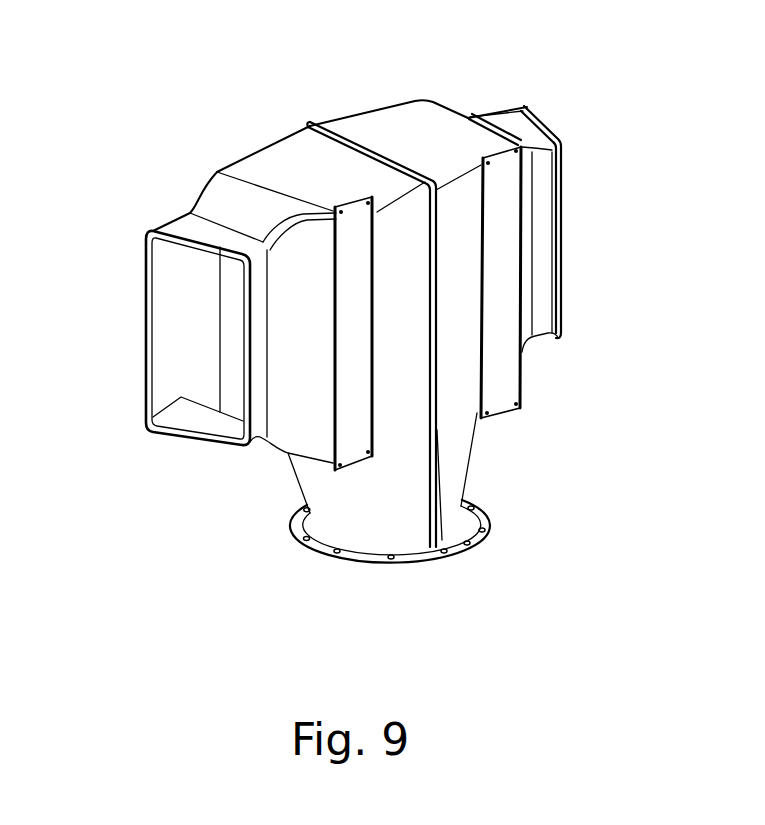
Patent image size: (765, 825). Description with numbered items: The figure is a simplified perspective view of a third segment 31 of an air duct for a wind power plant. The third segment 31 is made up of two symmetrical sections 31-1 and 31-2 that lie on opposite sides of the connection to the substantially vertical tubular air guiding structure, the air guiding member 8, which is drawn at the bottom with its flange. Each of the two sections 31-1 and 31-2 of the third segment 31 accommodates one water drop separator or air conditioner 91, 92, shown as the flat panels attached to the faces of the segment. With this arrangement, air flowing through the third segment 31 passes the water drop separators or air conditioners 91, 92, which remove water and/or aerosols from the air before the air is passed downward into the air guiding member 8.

The third segment 31 is at (130, 232).
The first section of the third segment 31-1 is at (275, 137).
The second section of the third segment 31-2 is at (403, 98).
The water drop separator or air conditioner 91 is at (360, 452).
The water drop separator or air conditioner 92 is at (502, 405).
The air guiding member 8 is at (402, 562).